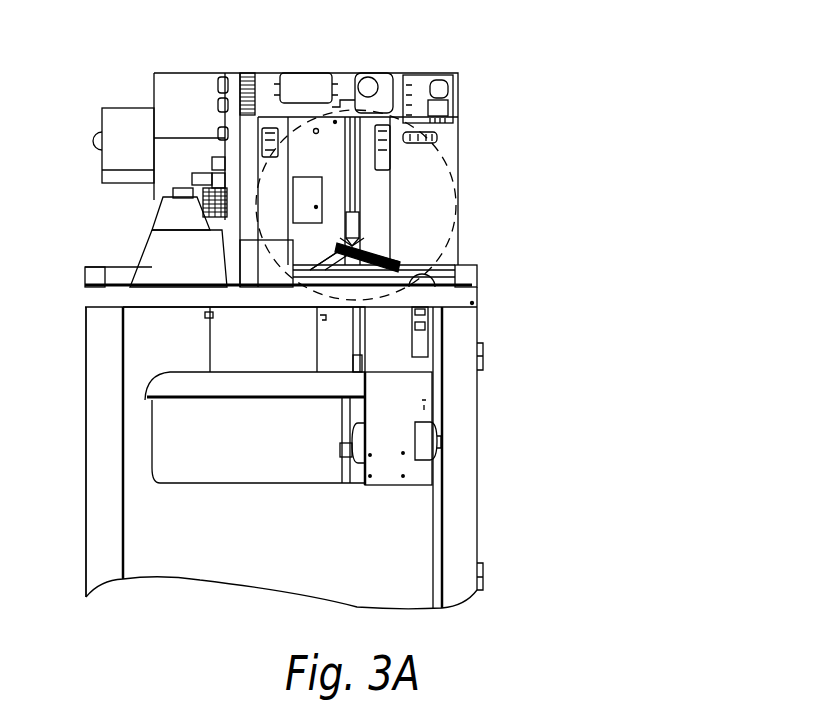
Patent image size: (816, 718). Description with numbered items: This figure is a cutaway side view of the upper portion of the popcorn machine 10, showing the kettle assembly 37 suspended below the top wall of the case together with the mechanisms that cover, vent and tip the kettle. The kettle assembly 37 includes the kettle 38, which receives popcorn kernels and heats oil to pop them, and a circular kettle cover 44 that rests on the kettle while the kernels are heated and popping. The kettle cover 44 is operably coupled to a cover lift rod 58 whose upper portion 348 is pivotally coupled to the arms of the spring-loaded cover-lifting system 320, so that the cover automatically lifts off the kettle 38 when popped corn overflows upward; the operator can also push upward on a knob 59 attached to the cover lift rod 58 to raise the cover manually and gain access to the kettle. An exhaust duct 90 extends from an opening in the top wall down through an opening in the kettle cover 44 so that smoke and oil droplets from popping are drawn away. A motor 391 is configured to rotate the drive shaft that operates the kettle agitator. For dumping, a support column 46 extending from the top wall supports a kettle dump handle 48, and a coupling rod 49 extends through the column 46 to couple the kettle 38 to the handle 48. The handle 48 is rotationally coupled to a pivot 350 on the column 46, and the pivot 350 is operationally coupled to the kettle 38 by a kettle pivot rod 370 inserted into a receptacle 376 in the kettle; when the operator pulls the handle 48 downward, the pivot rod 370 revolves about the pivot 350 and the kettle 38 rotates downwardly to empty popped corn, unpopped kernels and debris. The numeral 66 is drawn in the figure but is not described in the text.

The popcorn machine 10 is at (105, 86).
The controller housing 66 is at (455, 105).
The motor 391 is at (210, 200).
The upper portion of the cover lift rod 348 is at (362, 186).
The cover-lifting system 320 is at (400, 248).
The cover lift rod 58 is at (355, 335).
The knob 59 is at (362, 367).
The exhaust duct 90 is at (233, 353).
The kettle cover 44 is at (176, 383).
The kettle 38 is at (176, 438).
The support column 46 is at (410, 380).
The kettle dump handle 48 is at (432, 410).
The coupling rod 49 is at (438, 443).
The pivot 350 is at (358, 438).
The receptacle 376 is at (343, 462).
The kettle pivot rod 370 is at (362, 445).
The kettle assembly 37 is at (219, 497).